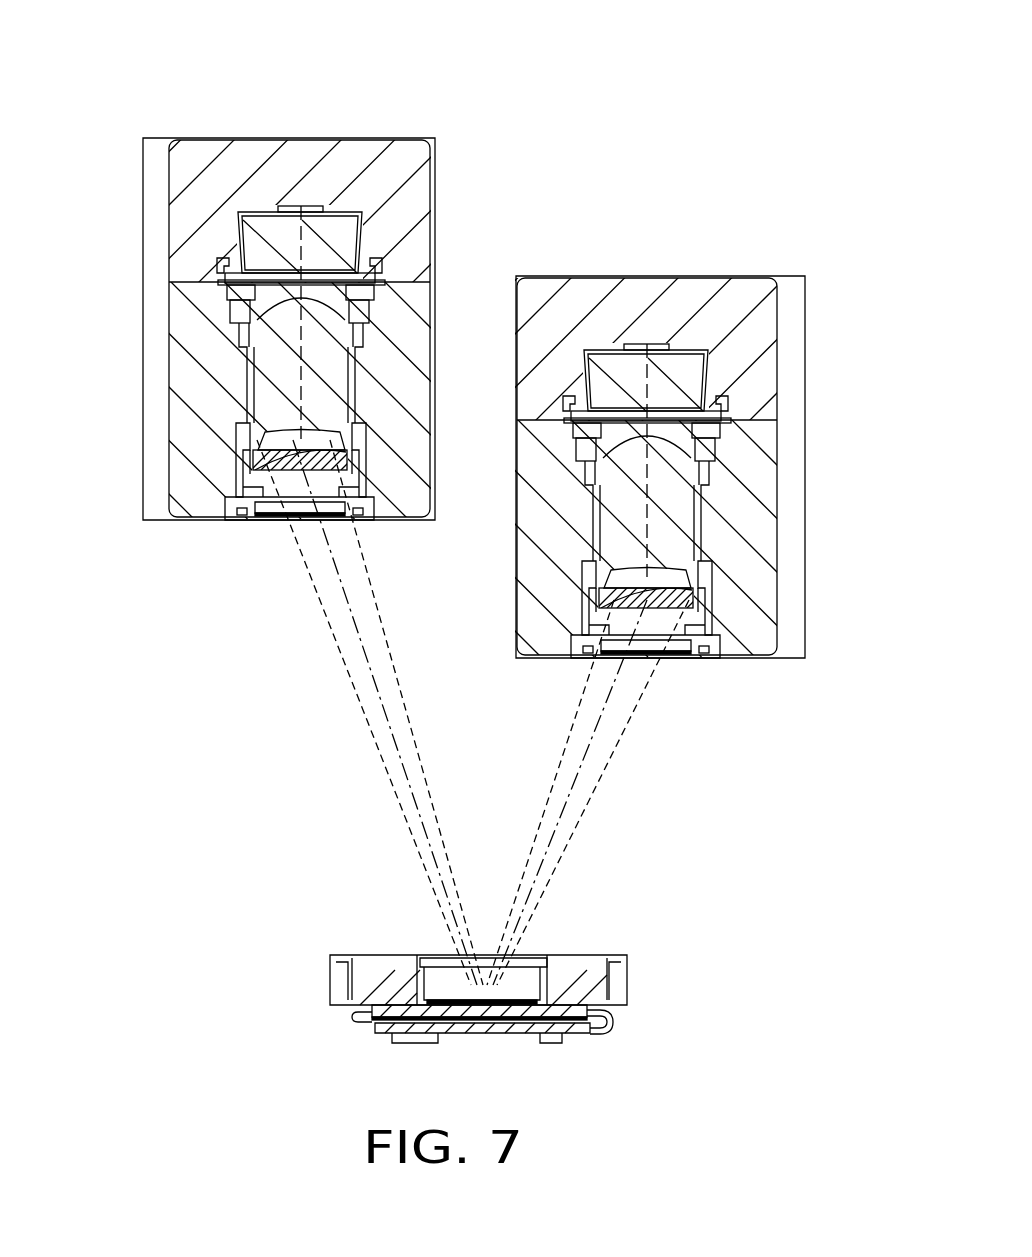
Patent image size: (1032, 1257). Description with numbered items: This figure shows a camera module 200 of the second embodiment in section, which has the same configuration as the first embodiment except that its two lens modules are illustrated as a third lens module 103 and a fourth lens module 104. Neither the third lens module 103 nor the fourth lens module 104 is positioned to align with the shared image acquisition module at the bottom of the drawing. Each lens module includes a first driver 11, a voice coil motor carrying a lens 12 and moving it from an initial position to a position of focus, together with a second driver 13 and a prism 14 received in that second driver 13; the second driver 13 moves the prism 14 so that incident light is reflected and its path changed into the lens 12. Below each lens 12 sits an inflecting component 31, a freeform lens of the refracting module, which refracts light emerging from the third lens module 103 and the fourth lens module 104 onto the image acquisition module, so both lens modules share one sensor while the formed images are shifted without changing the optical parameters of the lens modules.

The camera module 200 is at (517, 37).
The fourth lens module 104 is at (72, 155).
The third lens module 103 is at (873, 290).
The first driver 11 is at (193, 345).
The lens 12 is at (280, 410).
The second driver 13 is at (190, 177).
The prism 14 is at (248, 245).
The inflecting component 31 is at (285, 458).